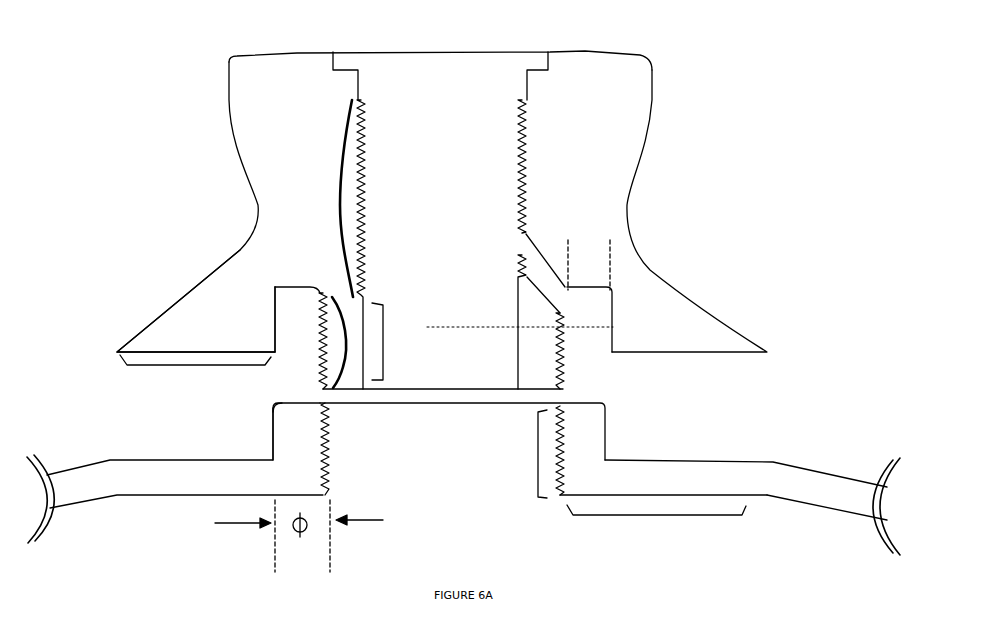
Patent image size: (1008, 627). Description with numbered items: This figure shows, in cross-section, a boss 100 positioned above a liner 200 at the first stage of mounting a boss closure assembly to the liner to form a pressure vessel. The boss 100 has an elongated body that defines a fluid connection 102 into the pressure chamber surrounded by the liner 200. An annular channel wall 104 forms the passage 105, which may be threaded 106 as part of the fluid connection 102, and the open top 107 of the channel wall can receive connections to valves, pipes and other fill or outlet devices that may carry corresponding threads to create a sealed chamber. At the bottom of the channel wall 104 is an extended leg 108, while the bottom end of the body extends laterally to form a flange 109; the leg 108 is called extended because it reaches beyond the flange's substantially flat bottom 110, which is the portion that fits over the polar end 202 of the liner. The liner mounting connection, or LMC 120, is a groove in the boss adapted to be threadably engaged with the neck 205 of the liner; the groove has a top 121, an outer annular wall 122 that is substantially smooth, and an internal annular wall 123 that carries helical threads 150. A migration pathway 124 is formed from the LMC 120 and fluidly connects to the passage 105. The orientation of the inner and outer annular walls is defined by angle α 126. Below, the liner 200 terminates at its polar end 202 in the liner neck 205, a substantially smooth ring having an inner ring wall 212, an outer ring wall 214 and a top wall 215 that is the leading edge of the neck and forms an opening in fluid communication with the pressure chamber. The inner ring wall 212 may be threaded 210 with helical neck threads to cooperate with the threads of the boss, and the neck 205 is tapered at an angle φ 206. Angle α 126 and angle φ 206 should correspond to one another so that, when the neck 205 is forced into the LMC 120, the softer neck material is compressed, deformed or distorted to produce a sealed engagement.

The boss 100 is at (222, 131).
The fluid connection 102 is at (482, 75).
The annular channel wall 104 is at (341, 199).
The passage 105 is at (430, 254).
The threads of the passage 106 is at (378, 186).
The open top of the channel wall 107 is at (373, 51).
The extended leg 108 is at (383, 342).
The flange 109 is at (195, 285).
The flange bottom 110 is at (197, 366).
The liner mounting connection (LMC) 120 is at (589, 336).
The top of the LMC groove 121 is at (304, 289).
The outer annular wall 122 is at (275, 332).
The internal annular wall 123 is at (311, 331).
The migration pathway 124 is at (545, 271).
The angle α 126 is at (589, 262).
The helical threads 150 is at (345, 318).
The liner 200 is at (200, 489).
The polar end 202 is at (660, 516).
The liner neck 205 is at (599, 442).
The angle φ 206 is at (299, 536).
The neck threads 210 is at (538, 458).
The inner ring wall 212 is at (348, 461).
The outer ring wall 214 is at (273, 434).
The top wall 215 is at (296, 402).